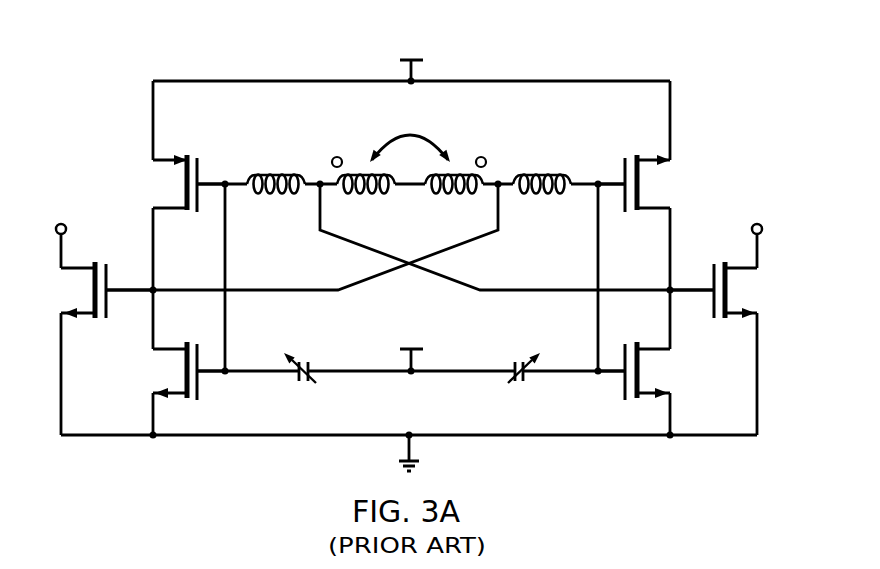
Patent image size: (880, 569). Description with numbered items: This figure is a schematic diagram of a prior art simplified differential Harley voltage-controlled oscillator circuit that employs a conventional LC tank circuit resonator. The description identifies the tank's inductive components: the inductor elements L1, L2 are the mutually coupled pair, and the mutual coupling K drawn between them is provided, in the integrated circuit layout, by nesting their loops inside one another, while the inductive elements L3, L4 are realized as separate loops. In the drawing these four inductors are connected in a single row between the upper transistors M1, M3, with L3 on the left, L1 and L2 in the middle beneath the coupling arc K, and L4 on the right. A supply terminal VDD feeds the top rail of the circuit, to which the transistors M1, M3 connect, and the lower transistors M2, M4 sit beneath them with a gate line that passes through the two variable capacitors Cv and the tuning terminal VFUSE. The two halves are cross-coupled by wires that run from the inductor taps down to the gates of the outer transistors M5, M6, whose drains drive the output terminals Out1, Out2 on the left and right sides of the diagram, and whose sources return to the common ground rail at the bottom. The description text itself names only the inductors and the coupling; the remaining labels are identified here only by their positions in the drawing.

The transistor M1 is at (177, 183).
The transistor M2 is at (177, 371).
The transistor M3 is at (648, 183).
The transistor M4 is at (648, 371).
The transistor M5 is at (95, 290).
The transistor M6 is at (727, 290).
The inductor element L1 is at (363, 189).
The inductor element L2 is at (455, 189).
The inductive element L3 is at (276, 198).
The inductive element L4 is at (542, 198).
The mutual coupling K is at (410, 135).
The varactor capacitor Cv is at (412, 381).
The supply voltage terminal VDD is at (411, 53).
The fuse/tuning voltage terminal VFUSE is at (413, 343).
The first output terminal Out1 is at (63, 214).
The second output terminal Out2 is at (757, 214).